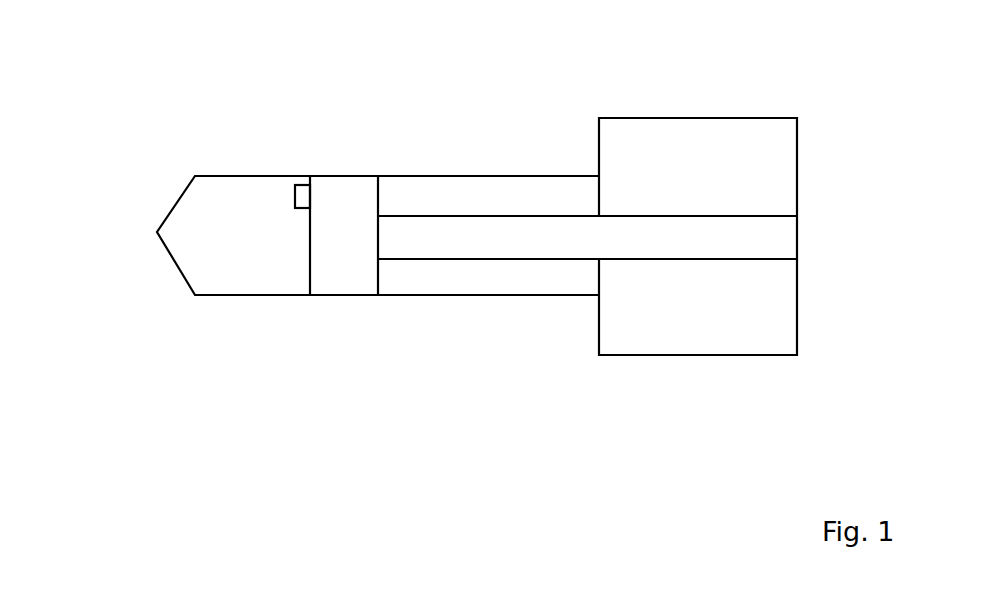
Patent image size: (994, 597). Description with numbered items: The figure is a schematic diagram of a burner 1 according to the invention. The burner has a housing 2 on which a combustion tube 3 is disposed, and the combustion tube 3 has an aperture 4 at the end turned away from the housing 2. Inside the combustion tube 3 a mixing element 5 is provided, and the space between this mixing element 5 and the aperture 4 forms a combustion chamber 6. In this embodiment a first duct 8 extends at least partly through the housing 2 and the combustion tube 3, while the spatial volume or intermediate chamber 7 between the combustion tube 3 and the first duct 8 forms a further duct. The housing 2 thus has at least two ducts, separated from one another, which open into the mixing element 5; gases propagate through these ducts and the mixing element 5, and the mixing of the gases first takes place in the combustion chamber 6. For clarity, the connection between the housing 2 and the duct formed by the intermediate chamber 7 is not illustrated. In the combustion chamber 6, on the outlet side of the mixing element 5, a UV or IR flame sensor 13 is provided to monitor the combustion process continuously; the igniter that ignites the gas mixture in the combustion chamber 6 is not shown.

The ultrasonic probe / device 1 is at (113, 47).
The housing 2 is at (735, 156).
The combustion tube 3 is at (412, 171).
The aperture 4 is at (149, 231).
The mixing element 5 is at (331, 269).
The combustion chamber 6 is at (225, 238).
The intermediate chamber 7 is at (456, 288).
The first duct 8 is at (597, 238).
The sensor element 13 is at (289, 194).